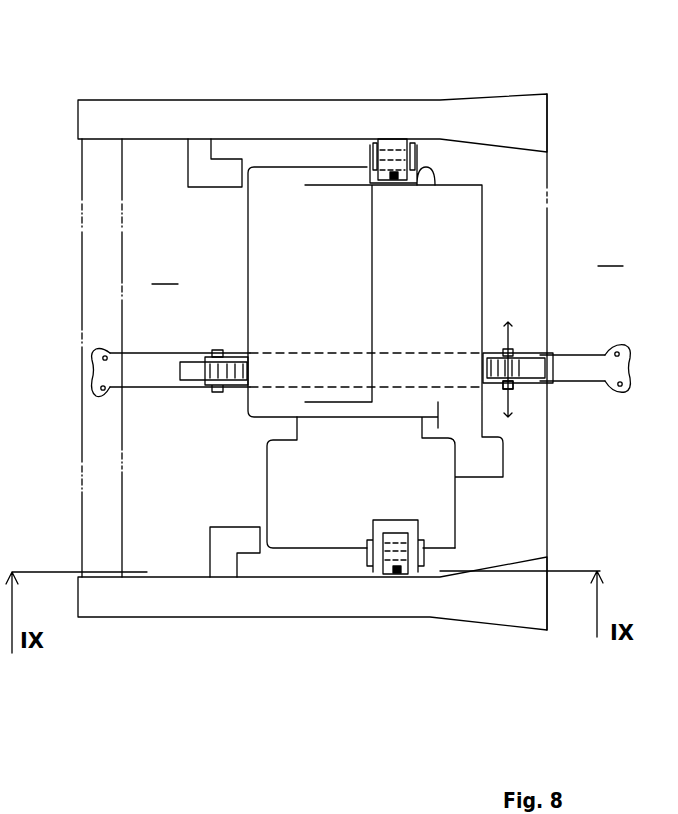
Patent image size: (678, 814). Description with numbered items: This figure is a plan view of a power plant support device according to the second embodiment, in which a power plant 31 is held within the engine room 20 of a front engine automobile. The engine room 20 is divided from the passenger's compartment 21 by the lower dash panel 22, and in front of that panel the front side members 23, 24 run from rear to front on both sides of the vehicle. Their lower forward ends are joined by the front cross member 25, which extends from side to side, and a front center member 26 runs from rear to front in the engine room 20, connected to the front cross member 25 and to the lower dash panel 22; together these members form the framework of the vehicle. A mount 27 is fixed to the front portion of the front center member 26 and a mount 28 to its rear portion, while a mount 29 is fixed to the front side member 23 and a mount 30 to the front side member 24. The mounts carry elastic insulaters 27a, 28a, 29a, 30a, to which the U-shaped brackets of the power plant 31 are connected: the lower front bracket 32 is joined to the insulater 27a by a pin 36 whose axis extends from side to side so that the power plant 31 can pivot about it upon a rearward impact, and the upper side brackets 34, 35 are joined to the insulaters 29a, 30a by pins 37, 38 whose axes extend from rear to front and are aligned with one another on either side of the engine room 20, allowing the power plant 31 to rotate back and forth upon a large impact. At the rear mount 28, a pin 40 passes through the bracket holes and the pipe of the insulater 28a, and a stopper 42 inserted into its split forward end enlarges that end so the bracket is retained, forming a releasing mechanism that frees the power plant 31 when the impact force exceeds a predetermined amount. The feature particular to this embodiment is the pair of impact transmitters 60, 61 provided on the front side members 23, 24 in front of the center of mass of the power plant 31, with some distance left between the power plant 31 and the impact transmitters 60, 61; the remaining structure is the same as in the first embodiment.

The engine room 20 is at (150, 358).
The passenger's compartment 21 is at (611, 255).
The lower dash panel 22 is at (548, 248).
The front side member 23 is at (188, 617).
The front side member 24 is at (278, 113).
The front cross member 25 is at (77, 258).
The front center member 26 is at (92, 397).
The mount 27 is at (180, 372).
The elastic insulater 27a is at (197, 358).
The mount 28 is at (585, 350).
The elastic insulater 28a is at (553, 395).
The mount 29 is at (388, 578).
The elastic insulater 29a is at (403, 574).
The mount 30 is at (400, 138).
The elastic insulater 30a is at (417, 133).
The power plant 31 is at (265, 178).
The U-shaped bracket 32 is at (192, 384).
The U-shaped bracket 34 is at (375, 578).
The U-shaped bracket 35 is at (378, 137).
The pin 36 is at (217, 392).
The pin 37 is at (372, 550).
The pin 38 is at (368, 160).
The pin 40 is at (512, 350).
The stopper 42 is at (515, 390).
The impact transmitter 60 is at (237, 525).
The impact transmitter 61 is at (208, 188).